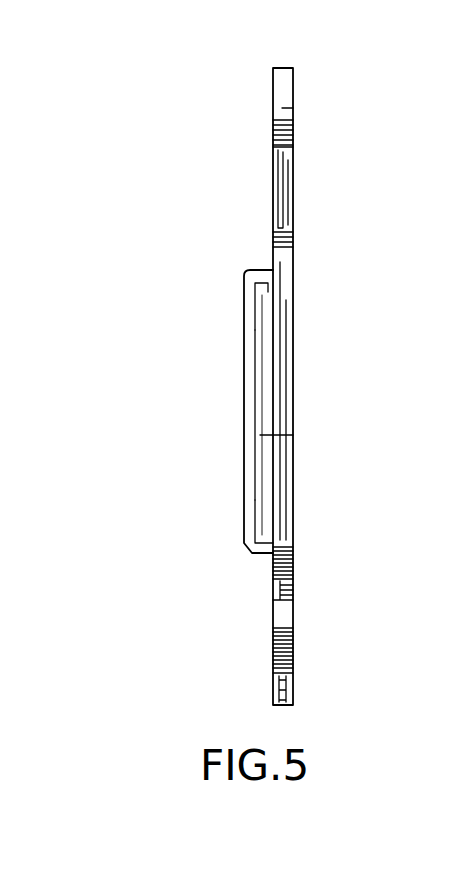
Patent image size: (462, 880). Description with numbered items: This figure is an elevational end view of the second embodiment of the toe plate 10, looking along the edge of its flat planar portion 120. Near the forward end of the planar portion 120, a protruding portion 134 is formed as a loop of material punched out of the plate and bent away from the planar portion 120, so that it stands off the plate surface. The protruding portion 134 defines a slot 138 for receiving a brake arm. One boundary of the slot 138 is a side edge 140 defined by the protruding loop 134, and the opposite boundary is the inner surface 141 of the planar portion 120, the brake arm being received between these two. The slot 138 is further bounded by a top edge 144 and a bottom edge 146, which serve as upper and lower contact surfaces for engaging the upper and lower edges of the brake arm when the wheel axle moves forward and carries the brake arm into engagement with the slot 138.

The toe plate 10 is at (350, 188).
The planar portion 120 is at (293, 553).
The protruding portion 134 is at (258, 268).
The slot 138 is at (265, 463).
The side edge 140 is at (293, 435).
The inner surface 141 is at (268, 486).
The top edge 144 is at (268, 292).
The bottom edge 146 is at (262, 543).